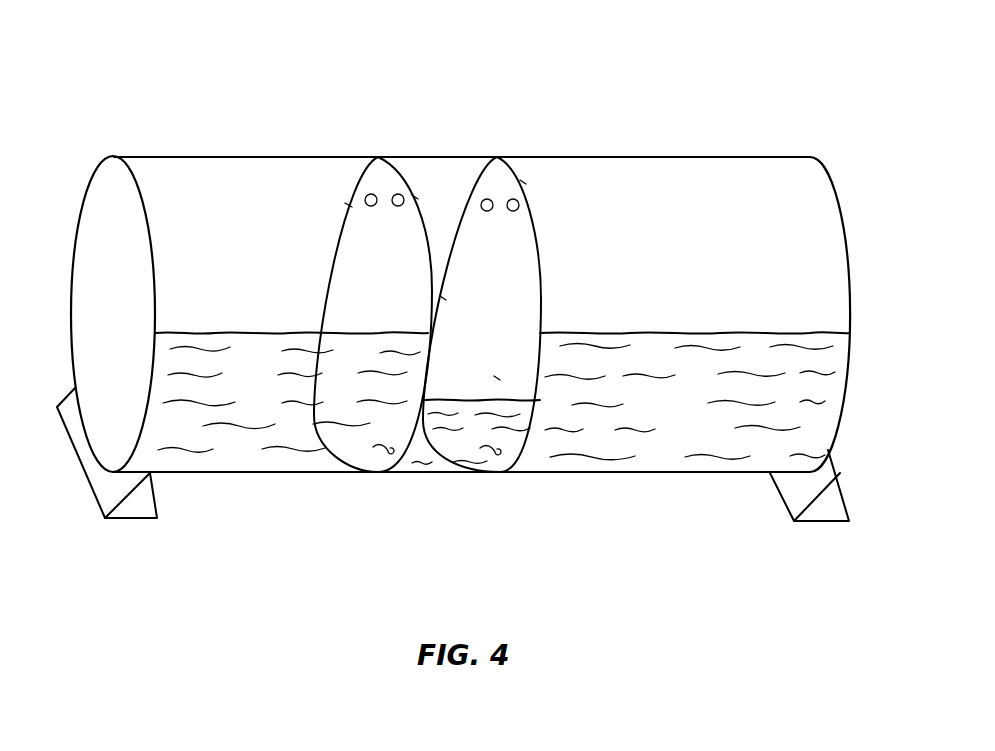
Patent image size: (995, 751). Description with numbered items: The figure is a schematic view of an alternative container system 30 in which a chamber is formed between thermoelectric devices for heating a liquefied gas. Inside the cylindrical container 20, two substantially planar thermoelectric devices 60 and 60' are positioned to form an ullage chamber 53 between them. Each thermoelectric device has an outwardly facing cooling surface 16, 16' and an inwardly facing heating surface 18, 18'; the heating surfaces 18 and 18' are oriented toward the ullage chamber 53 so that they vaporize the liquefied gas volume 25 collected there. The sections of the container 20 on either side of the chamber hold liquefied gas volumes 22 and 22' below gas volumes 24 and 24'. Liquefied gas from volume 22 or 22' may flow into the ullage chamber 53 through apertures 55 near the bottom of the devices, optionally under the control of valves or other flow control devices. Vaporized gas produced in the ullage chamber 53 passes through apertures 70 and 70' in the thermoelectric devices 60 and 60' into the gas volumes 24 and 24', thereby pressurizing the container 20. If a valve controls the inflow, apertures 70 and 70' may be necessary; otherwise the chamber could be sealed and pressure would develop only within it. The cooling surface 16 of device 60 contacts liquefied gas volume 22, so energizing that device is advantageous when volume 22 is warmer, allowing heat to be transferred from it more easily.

The container 20 is at (207, 176).
The cooling surface 16 is at (347, 350).
The cooling surface 16' is at (528, 290).
The thermoelectric device 60 is at (313, 151).
The thermoelectric device 60' is at (553, 139).
The aperture 70 is at (377, 149).
The aperture 70' is at (500, 148).
The heating surface 18 is at (426, 145).
The heating surface 18' is at (464, 466).
The ullage chamber 53 is at (443, 298).
The gas volume 24 is at (235, 262).
The gas volume 24' is at (700, 260).
The liquefied gas volume 22 is at (291, 392).
The liquefied gas volume 22' is at (695, 395).
The liquefied gas volume 25 is at (453, 459).
The apertures 55 is at (338, 347).
The container system 30 is at (712, 104).